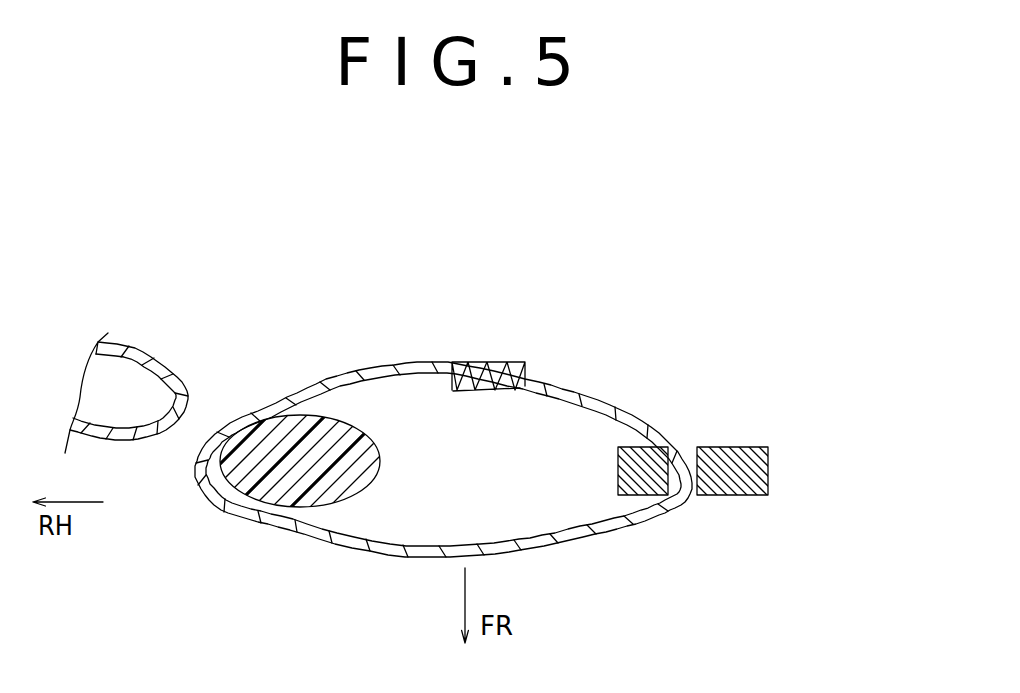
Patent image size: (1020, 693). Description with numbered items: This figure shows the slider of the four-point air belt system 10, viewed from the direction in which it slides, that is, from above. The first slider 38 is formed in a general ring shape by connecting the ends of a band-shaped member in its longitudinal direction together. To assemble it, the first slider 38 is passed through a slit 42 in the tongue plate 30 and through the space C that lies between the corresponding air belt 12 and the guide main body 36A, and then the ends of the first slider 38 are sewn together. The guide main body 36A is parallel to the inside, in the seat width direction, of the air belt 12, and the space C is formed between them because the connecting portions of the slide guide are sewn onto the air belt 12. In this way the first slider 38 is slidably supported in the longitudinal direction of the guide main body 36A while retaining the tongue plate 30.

The four-point air belt system 10 is at (737, 342).
The air belt 12 is at (157, 352).
The tongue plate 30 is at (755, 438).
The guide main body 36A is at (378, 448).
The first slider 38 is at (560, 378).
The slit 42 is at (688, 446).
The space C is at (200, 427).